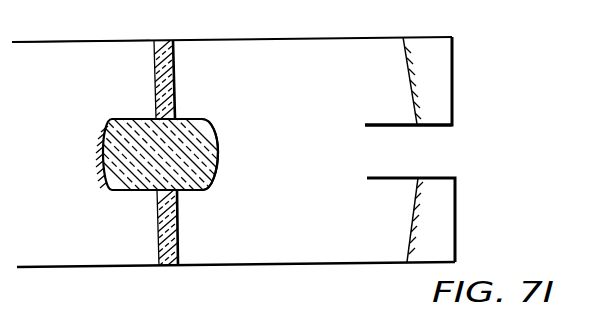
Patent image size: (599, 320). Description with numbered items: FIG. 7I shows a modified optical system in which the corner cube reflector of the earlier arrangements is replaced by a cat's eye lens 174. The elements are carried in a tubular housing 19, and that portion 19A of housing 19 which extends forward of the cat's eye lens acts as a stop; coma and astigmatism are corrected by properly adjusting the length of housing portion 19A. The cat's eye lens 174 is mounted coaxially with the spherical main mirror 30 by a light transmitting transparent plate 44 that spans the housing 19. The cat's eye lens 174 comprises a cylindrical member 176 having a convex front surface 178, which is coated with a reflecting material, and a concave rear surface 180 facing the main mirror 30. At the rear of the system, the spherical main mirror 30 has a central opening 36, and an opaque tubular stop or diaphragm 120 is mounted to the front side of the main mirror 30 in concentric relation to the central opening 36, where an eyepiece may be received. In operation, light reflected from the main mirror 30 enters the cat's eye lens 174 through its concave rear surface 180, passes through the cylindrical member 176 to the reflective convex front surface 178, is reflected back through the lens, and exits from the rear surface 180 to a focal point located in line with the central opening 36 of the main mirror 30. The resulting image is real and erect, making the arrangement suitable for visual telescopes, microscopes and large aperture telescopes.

The housing 19 is at (266, 38).
The housing portion 19A is at (110, 41).
The transparent plate 44 is at (159, 66).
The cat's eye lens 174 is at (189, 113).
The cylindrical member 176 is at (133, 190).
The convex front surface 178 is at (103, 143).
The concave rear surface 180 is at (219, 150).
The main mirror 30 is at (442, 91).
The central opening 36 is at (436, 126).
The tubular stop 120 is at (383, 179).